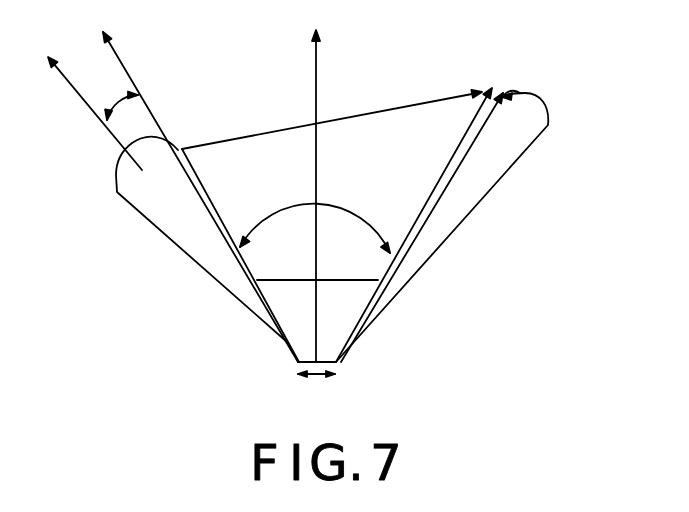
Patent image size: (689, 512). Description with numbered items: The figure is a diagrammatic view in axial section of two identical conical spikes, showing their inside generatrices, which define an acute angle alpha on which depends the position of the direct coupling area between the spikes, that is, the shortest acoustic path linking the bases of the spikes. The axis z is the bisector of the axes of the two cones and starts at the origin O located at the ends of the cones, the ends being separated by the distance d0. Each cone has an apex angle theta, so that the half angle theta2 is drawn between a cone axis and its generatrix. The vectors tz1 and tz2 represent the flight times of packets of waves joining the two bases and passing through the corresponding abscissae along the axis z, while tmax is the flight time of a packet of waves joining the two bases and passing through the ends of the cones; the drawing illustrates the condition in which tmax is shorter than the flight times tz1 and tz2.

The axis oz z is at (313, 183).
The half apex angle θ/2 theta2 is at (95, 101).
The angle α between inside generatrices alpha is at (315, 214).
The flight time t_z1 tz1 is at (415, 102).
The flight time t_z2 tz2 is at (437, 183).
The flight time t_max tmax is at (518, 93).
The origin O is at (326, 349).
The distance d_0 between cone ends d0 is at (316, 390).